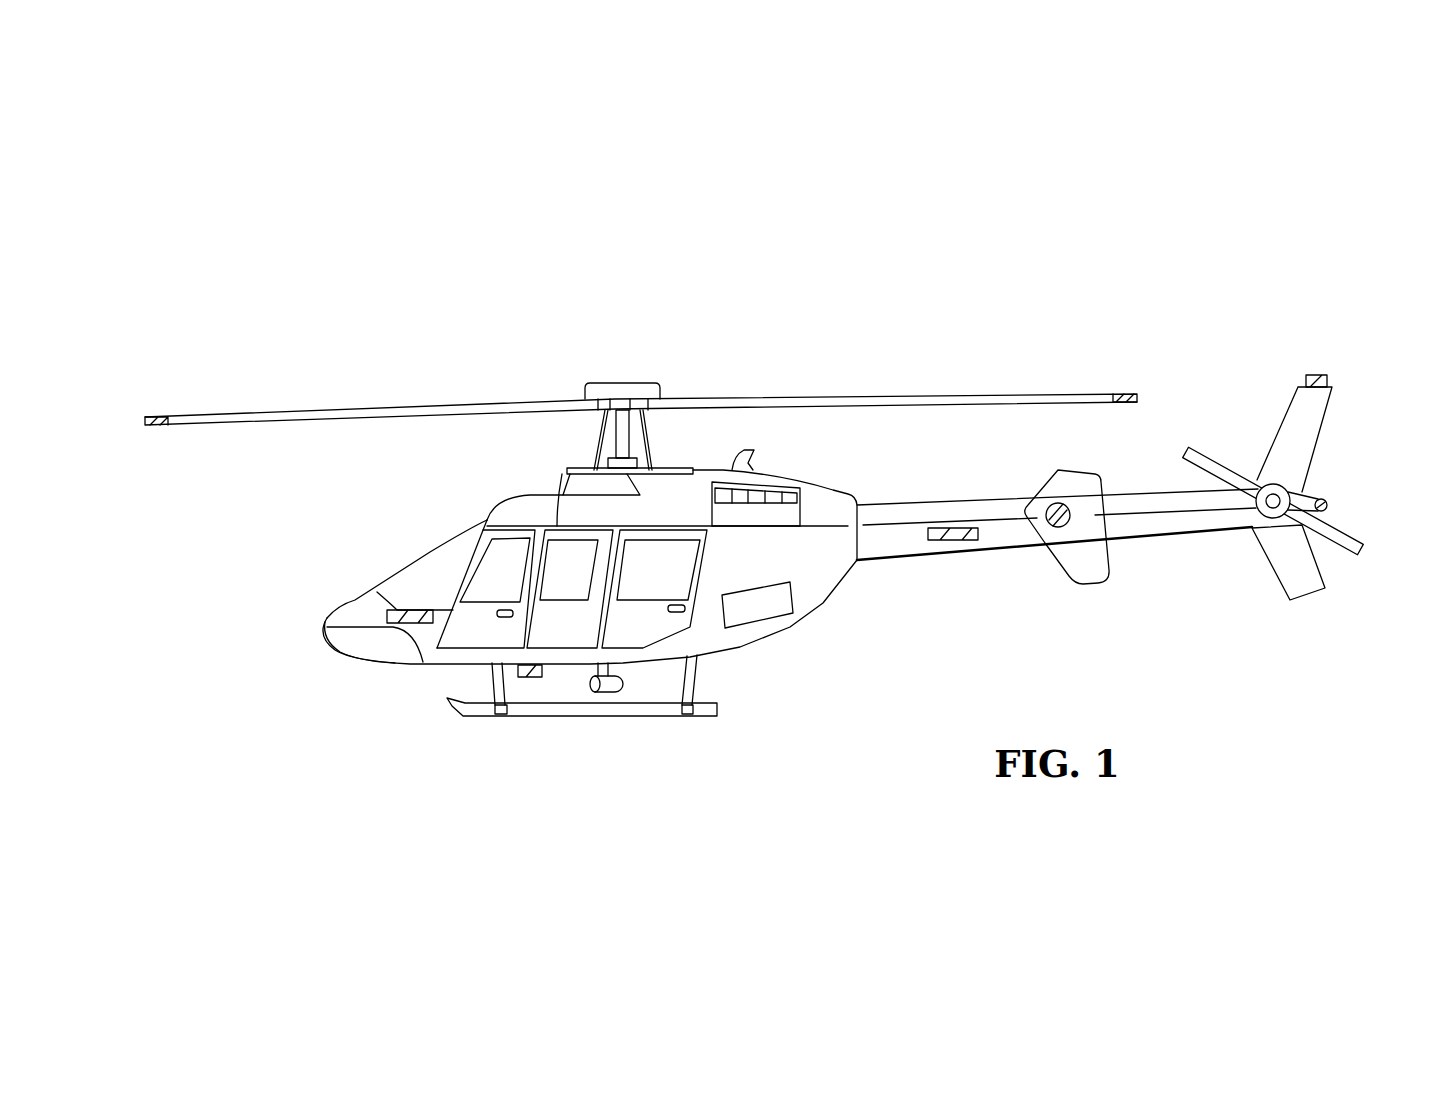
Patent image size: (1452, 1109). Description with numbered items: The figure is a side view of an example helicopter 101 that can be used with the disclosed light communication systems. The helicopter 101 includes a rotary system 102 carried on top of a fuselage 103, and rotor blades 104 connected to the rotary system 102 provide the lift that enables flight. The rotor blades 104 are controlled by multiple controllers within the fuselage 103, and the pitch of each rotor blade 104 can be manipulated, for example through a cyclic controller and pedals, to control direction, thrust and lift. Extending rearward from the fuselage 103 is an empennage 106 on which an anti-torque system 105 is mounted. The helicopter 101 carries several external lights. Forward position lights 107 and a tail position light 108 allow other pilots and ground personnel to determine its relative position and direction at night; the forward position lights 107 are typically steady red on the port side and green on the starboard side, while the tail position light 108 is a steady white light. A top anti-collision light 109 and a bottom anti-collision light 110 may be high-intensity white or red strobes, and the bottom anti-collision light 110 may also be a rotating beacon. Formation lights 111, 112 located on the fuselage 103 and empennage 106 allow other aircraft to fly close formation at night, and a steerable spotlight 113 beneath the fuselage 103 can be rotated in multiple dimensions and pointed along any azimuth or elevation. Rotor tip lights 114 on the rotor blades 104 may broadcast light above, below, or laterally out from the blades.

The helicopter 101 is at (447, 340).
The rotary system 102 is at (640, 376).
The fuselage 103 is at (377, 657).
The rotor blades 104 is at (890, 397).
The anti-torque system 105 is at (1350, 530).
The empennage 106 is at (950, 553).
The forward position lights 107 is at (1058, 504).
The tail position light 108 is at (1328, 507).
The top anti-collision light 109 is at (1320, 375).
The bottom anti-collision light 110 is at (525, 677).
The formation light 111 is at (387, 617).
The formation light 112 is at (960, 528).
The steerable spotlight 113 is at (605, 694).
The rotor tip lights 114 is at (157, 428).